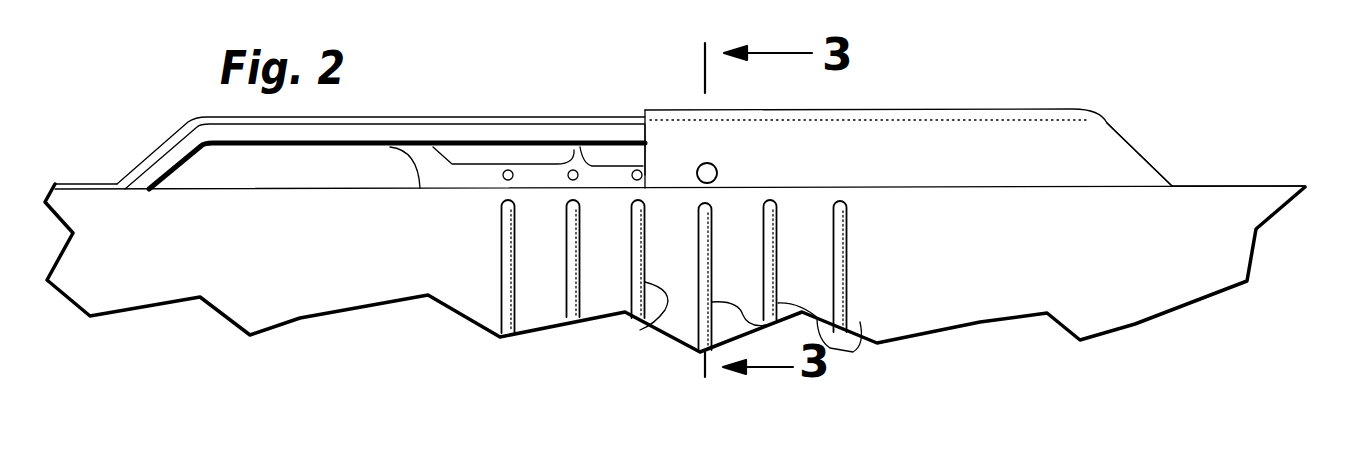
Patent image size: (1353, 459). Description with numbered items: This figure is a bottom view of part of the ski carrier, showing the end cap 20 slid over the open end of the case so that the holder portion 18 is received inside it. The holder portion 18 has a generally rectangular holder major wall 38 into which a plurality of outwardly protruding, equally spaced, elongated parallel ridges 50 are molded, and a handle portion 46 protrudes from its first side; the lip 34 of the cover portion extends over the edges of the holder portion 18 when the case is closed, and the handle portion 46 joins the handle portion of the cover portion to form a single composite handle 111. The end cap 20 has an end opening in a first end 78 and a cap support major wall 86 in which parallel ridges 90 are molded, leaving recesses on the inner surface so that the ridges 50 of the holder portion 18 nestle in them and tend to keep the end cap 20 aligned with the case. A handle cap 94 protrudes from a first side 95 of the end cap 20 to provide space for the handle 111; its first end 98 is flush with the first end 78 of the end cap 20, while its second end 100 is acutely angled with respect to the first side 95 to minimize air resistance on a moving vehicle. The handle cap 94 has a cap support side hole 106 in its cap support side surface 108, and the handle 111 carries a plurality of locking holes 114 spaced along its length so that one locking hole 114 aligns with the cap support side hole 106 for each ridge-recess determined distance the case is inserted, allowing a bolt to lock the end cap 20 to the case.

The holder portion 18 is at (200, 320).
The end cap 20 is at (1262, 240).
The lip 34 is at (440, 123).
The holder major wall 38 is at (347, 287).
The handle portion 46 is at (268, 132).
The ridges 50 is at (525, 311).
The first end 78 is at (655, 320).
The cap support major wall 86 is at (1140, 301).
The ridges 90 is at (820, 338).
The handle cap 94 is at (992, 120).
The first side 95 is at (1198, 186).
The first end 98 is at (647, 137).
The second end 100 is at (1118, 130).
The cap support side hole 106 is at (713, 164).
The cap support side surface 108 is at (1115, 158).
The handle 111 is at (360, 133).
The locking holes 114 is at (632, 172).